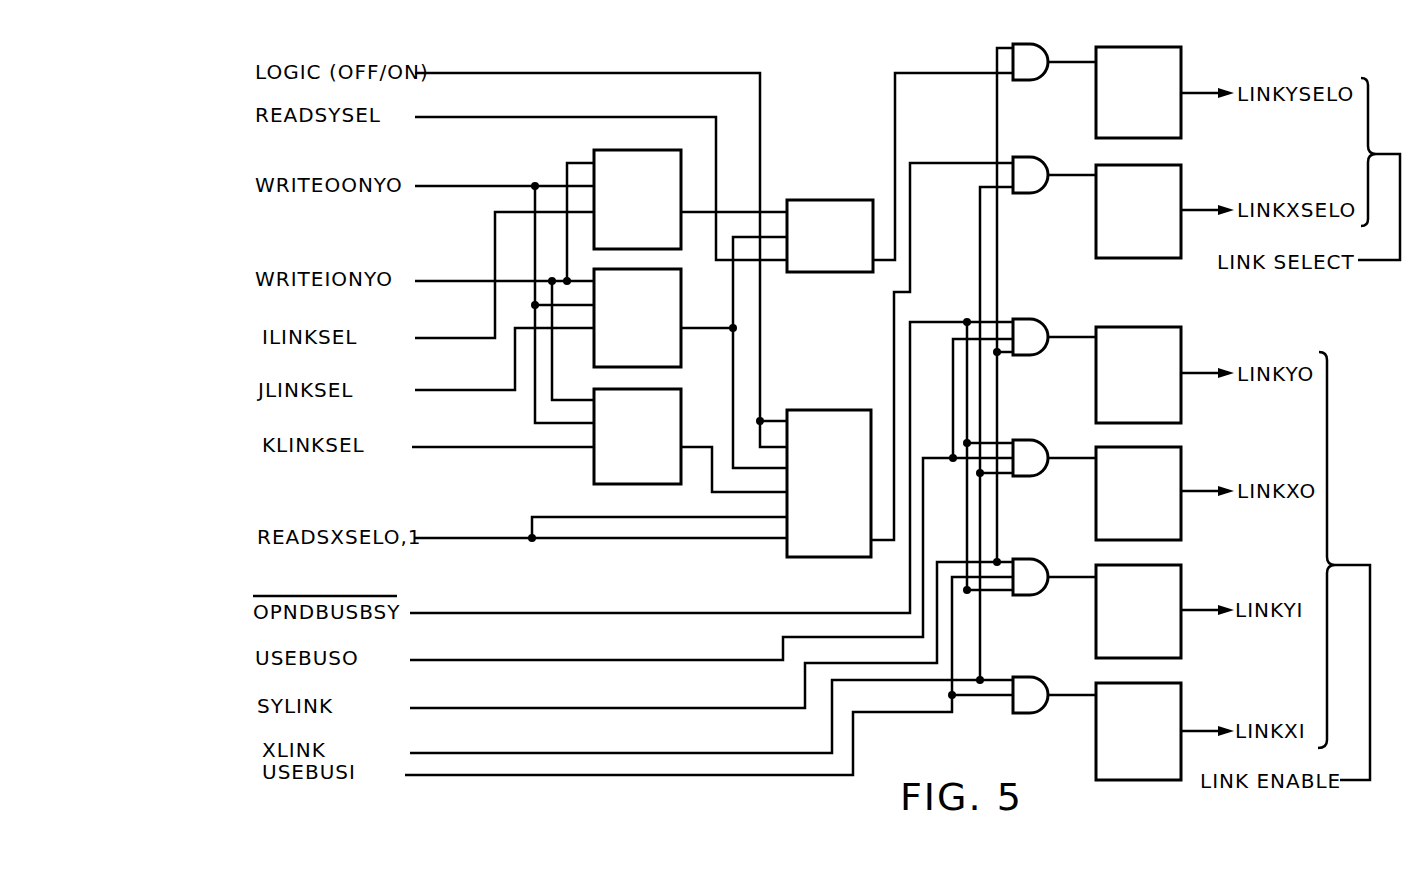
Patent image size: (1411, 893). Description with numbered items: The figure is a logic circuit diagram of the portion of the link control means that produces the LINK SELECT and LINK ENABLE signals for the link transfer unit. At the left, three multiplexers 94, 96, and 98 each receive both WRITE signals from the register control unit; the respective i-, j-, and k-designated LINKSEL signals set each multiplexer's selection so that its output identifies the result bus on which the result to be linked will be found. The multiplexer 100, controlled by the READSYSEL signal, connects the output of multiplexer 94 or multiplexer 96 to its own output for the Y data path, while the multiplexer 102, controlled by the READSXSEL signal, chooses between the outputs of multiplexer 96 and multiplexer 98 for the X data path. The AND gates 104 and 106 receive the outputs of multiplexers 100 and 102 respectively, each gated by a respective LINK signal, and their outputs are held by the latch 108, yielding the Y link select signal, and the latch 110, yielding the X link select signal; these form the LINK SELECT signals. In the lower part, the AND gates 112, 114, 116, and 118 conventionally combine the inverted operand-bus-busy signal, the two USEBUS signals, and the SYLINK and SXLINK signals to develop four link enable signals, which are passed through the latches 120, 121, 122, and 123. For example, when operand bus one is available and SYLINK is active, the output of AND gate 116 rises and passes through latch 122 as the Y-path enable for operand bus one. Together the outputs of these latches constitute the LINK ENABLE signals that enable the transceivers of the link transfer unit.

The multiplexer 94 is at (642, 150).
The multiplexer 96 is at (681, 317).
The multiplexer 98 is at (681, 427).
The multiplexer 100 is at (827, 200).
The multiplexer 102 is at (813, 410).
The AND gate 104 is at (1029, 81).
The AND gate 106 is at (1029, 194).
The latch 108 is at (1181, 68).
The latch 110 is at (1181, 173).
The AND gate 112 is at (1028, 316).
The AND gate 114 is at (1020, 440).
The AND gate 116 is at (1021, 559).
The AND gate 118 is at (1017, 677).
The latch 120 is at (1181, 345).
The latch 121 is at (1181, 462).
The latch 122 is at (1181, 580).
The latch 123 is at (1181, 697).